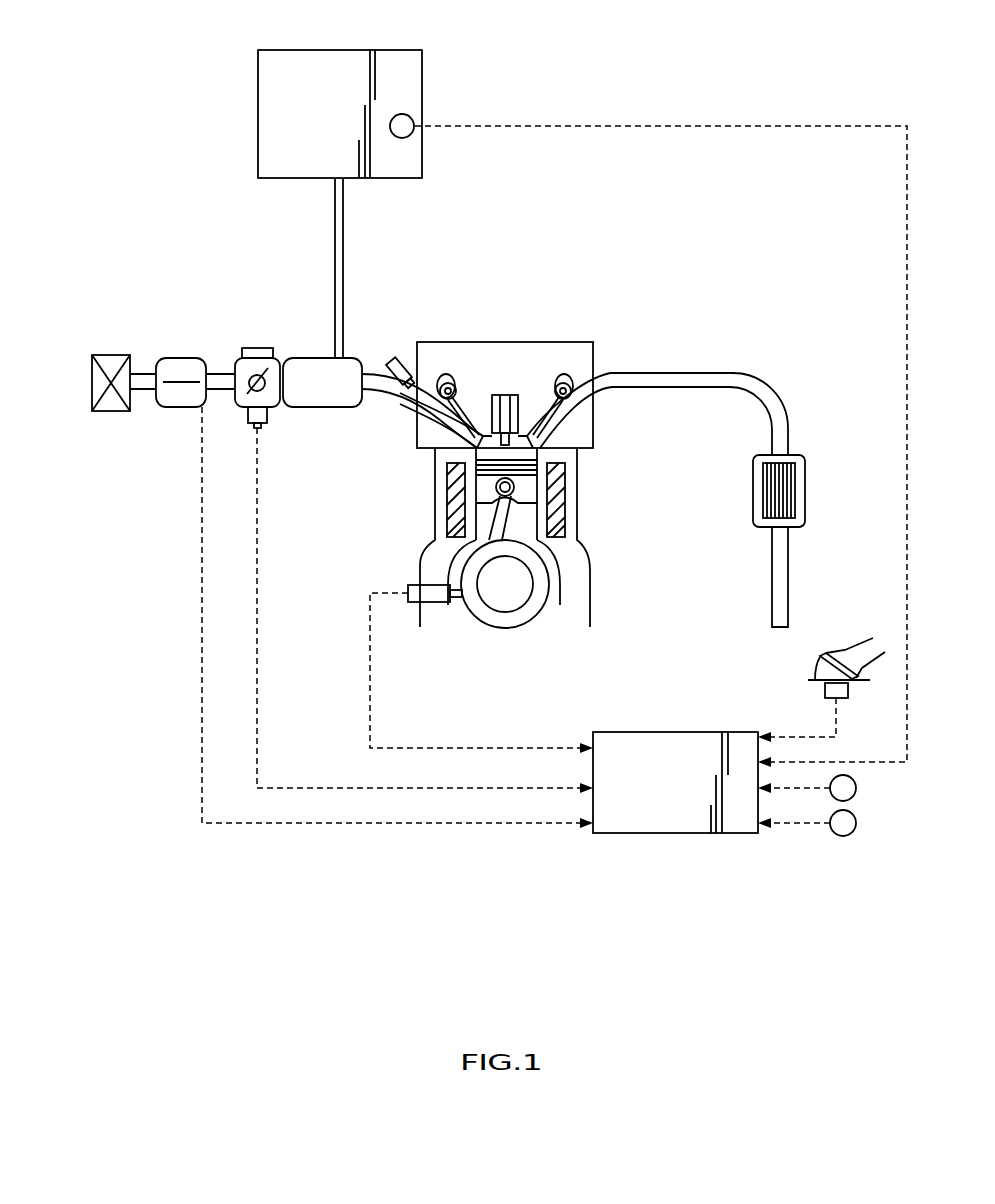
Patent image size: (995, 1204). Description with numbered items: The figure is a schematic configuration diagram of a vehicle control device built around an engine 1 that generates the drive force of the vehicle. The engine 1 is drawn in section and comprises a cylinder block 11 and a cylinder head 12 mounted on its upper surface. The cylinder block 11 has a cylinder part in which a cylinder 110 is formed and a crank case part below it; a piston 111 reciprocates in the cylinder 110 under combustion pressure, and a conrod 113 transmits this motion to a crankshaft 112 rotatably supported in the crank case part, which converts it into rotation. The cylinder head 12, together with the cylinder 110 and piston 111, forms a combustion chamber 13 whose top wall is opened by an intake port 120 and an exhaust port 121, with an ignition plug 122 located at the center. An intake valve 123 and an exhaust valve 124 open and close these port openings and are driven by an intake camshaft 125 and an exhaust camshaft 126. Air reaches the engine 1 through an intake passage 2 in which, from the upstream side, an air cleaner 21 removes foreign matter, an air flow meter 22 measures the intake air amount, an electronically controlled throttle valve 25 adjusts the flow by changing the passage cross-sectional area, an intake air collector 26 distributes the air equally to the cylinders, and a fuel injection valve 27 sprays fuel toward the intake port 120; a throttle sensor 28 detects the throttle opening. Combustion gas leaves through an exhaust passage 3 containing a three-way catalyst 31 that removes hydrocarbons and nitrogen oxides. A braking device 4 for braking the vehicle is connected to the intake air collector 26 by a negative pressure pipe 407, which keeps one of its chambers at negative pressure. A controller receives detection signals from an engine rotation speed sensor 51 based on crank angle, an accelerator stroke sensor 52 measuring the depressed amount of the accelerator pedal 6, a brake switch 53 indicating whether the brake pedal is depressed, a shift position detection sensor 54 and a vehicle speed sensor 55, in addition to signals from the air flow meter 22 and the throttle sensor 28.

The engine 1 is at (549, 320).
The intake passage 2 is at (142, 390).
The exhaust passage 3 is at (704, 373).
The braking device 4 is at (351, 50).
The accelerator pedal 6 is at (820, 664).
The cylinder block 11 is at (435, 483).
The cylinder head 12 is at (593, 364).
The combustion chamber 13 is at (520, 443).
The air cleaner 21 is at (111, 355).
The air flow meter 22 is at (180, 407).
The electronically controlled throttle valve 25 is at (259, 374).
The intake air collector 26 is at (305, 358).
The fuel injection valve 27 is at (247, 350).
The throttle sensor 28 is at (268, 415).
The three-way catalyst 31 is at (753, 483).
The engine rotation speed sensor 51 is at (415, 585).
The accelerator stroke sensor 52 is at (848, 690).
The brake switch 53 is at (405, 114).
The shift position detection sensor 54 is at (857, 788).
The vehicle speed sensor 55 is at (857, 823).
The cylinder 110 is at (481, 522).
The piston 111 is at (528, 493).
The crankshaft 112 is at (512, 598).
The conrod 113 is at (508, 526).
The intake port 120 is at (437, 378).
The exhaust port 121 is at (570, 376).
The ignition plug 122 is at (505, 400).
The intake valve 123 is at (478, 430).
The exhaust valve 124 is at (542, 403).
The intake camshaft 125 is at (452, 375).
The exhaust camshaft 126 is at (562, 383).
The negative pressure pipe 407 is at (343, 244).